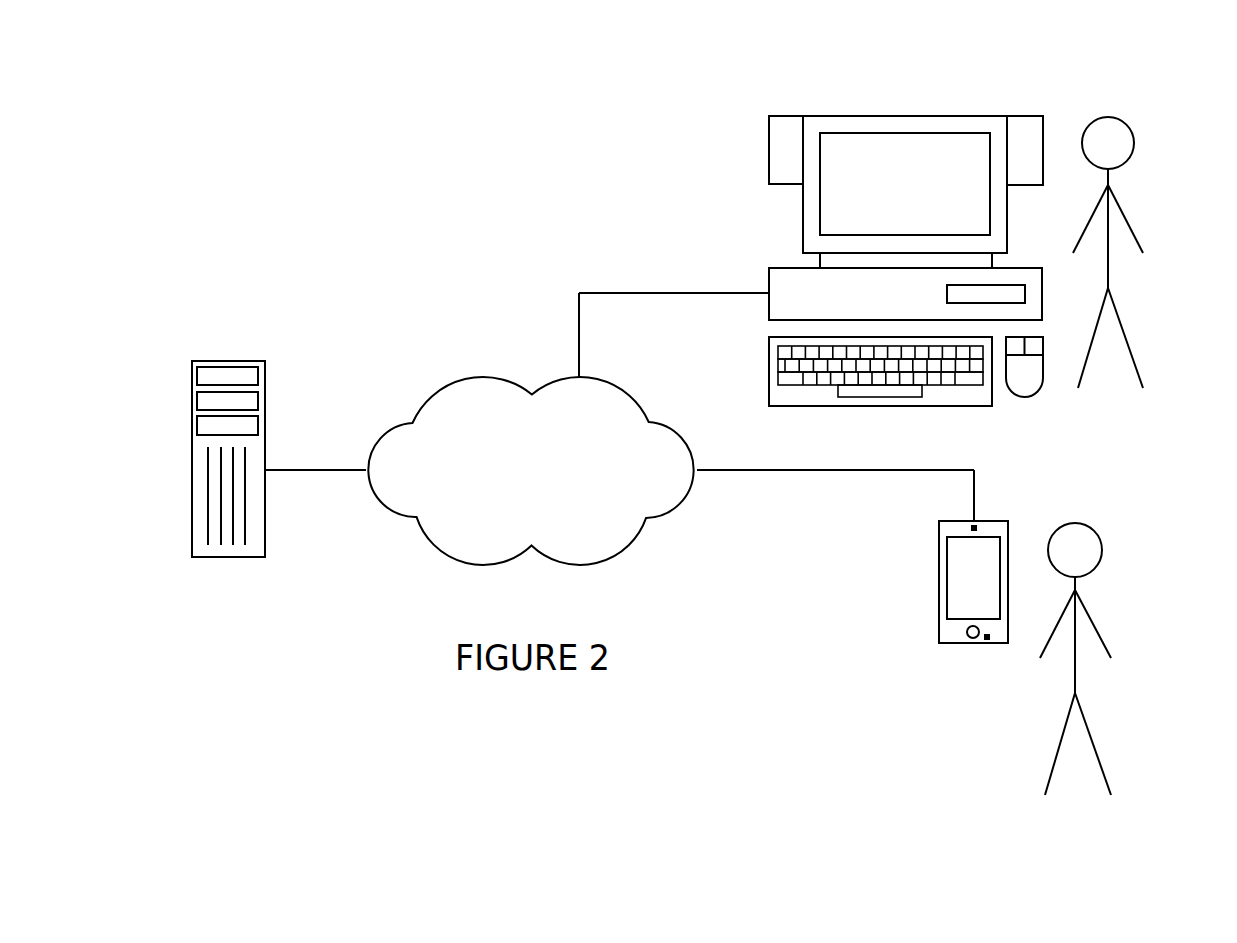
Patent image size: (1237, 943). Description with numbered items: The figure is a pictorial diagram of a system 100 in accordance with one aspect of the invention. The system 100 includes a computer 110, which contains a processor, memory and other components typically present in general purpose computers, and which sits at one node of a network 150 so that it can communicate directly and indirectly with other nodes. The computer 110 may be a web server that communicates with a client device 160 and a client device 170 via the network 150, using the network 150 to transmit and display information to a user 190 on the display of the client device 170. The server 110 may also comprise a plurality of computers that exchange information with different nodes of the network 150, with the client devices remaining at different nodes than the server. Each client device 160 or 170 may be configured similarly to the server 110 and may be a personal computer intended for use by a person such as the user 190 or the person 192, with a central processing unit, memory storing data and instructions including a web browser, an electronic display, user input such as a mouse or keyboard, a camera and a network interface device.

The system 100 is at (284, 89).
The computer 110 is at (192, 373).
The network 150 is at (483, 375).
The client device 160 is at (939, 544).
The client device 170 is at (907, 116).
The user 190 is at (1133, 200).
The person 192 is at (1100, 589).